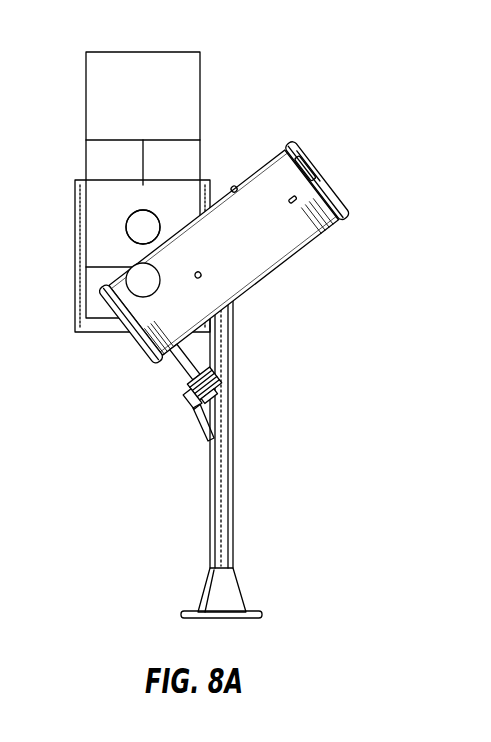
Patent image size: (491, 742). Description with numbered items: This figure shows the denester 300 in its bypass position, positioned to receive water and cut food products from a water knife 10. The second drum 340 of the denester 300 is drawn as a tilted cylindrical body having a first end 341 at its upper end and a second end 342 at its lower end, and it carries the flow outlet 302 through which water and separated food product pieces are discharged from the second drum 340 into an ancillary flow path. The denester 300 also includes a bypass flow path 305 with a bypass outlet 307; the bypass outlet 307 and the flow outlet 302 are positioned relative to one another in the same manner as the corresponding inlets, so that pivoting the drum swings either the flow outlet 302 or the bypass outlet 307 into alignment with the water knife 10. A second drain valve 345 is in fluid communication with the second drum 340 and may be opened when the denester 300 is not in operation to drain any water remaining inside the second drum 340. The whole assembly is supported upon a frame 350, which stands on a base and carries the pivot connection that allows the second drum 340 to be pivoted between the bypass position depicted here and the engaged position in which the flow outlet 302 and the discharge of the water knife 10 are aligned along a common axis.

The denester 300 is at (310, 70).
The water knife 10 is at (100, 52).
The flow outlet 302 is at (142, 282).
The bypass flow path 305 is at (128, 222).
The bypass outlet 307 is at (91, 220).
The second drum 340 is at (272, 270).
The first end 341 is at (324, 182).
The second end 342 is at (134, 338).
The second drain valve 345 is at (188, 392).
The frame 350 is at (233, 537).